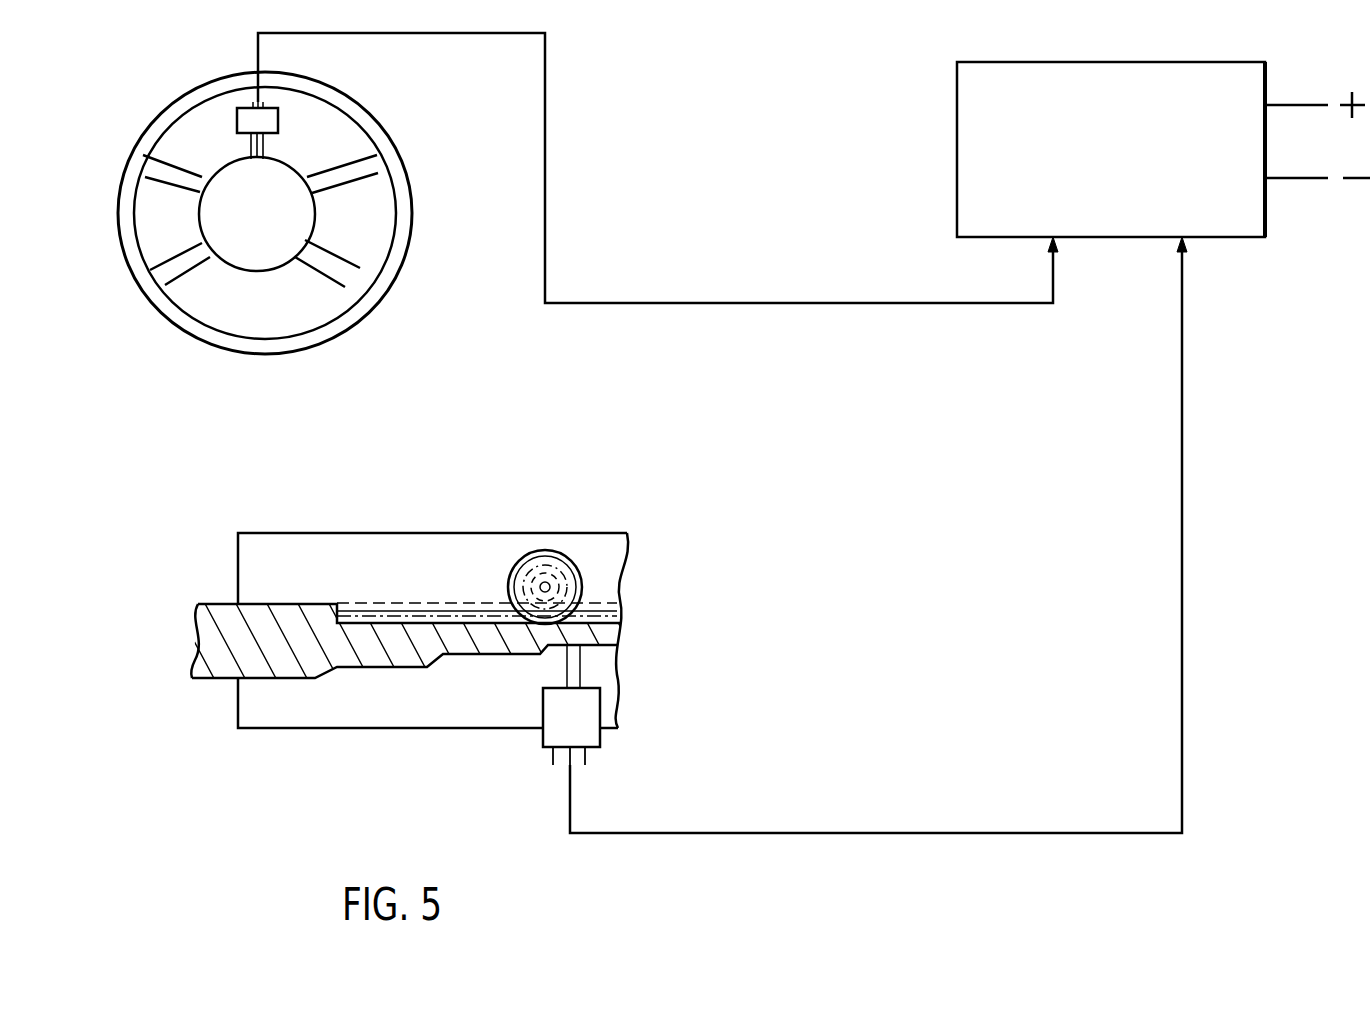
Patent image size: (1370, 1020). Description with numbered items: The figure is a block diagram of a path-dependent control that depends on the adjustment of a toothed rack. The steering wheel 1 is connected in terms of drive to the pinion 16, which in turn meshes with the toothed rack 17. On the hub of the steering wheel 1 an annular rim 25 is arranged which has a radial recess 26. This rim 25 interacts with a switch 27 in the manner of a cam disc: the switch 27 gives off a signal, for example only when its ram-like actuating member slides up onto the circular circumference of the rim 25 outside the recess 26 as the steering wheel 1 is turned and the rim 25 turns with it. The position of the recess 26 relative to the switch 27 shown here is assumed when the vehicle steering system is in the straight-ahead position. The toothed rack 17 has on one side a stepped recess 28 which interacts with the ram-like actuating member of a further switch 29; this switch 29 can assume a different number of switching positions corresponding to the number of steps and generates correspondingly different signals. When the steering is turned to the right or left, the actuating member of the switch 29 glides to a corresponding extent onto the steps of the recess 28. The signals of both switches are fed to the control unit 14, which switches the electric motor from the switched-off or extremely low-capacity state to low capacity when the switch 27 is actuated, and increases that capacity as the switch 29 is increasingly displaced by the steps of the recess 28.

The steering wheel 1 is at (184, 331).
The control unit 14 is at (963, 173).
The pinion 16 is at (545, 572).
The toothed rack 17 is at (230, 652).
The annular rim 25 is at (278, 271).
The radial recess 26 is at (258, 165).
The switch 27 is at (279, 122).
The stepped recess 28 is at (475, 660).
The further switch 29 is at (590, 735).